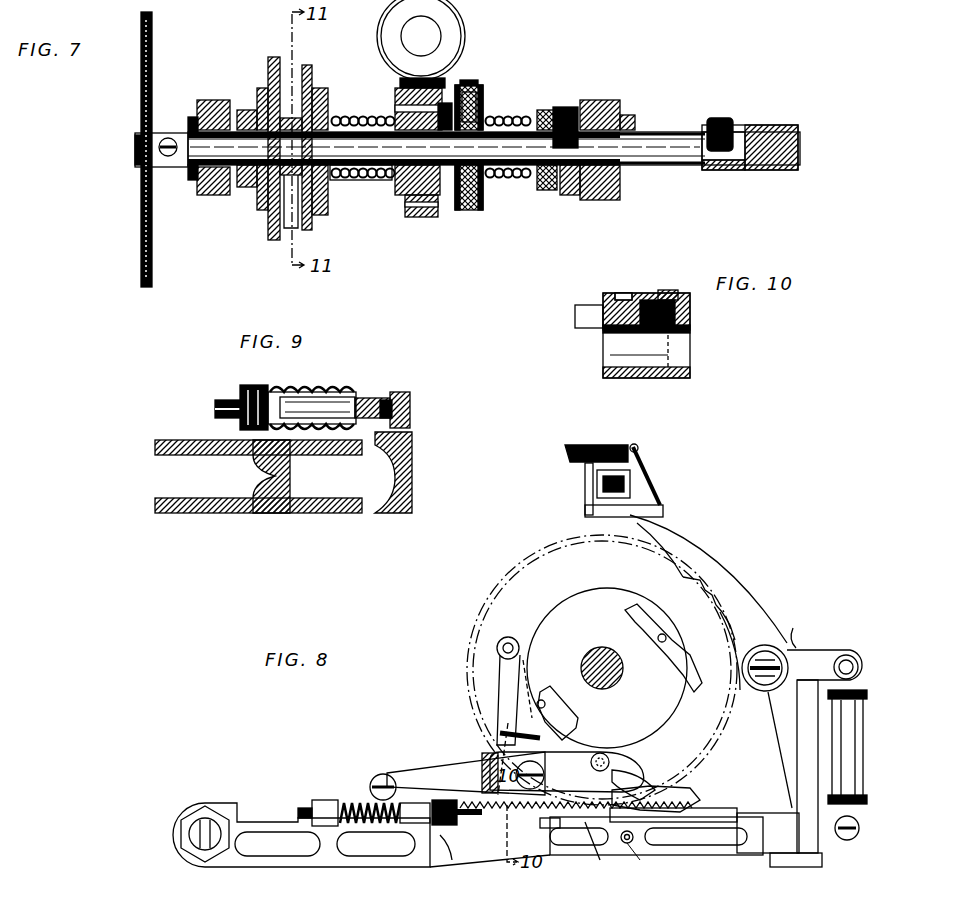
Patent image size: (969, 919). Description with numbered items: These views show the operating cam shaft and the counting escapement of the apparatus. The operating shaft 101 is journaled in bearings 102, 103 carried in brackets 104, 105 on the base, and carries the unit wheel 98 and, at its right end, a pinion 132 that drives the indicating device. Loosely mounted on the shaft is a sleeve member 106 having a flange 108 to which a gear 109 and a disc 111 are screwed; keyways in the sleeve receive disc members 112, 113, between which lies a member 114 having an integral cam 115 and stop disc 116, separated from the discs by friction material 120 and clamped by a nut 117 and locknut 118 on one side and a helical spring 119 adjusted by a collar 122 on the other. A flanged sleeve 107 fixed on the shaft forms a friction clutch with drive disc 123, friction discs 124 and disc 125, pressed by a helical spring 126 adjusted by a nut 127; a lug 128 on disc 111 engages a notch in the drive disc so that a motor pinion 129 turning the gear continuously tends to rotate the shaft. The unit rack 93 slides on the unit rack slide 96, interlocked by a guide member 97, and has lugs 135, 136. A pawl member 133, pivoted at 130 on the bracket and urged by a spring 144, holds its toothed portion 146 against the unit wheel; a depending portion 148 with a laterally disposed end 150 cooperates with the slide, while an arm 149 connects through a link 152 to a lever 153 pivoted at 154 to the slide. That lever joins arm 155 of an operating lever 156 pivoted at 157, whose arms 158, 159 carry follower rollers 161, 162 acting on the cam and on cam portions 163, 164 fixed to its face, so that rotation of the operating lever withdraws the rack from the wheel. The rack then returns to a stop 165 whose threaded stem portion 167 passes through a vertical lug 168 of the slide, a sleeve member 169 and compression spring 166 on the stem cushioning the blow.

In FIG. 10, the unit rack 93 is at (610, 300).
In FIG. 8, the unit rack 93 is at (550, 830).
In FIG. 10, the unit rack slide 96 is at (682, 350).
In FIG. 9, the unit rack slide 96 is at (272, 513).
In FIG. 8, the unit rack slide 96 is at (437, 852).
In FIG. 10, the guide member 97 is at (655, 303).
In FIG. 8, the guide member 97 is at (720, 815).
In FIG. 7, the unit wheel 98 is at (152, 257).
In FIG. 8, the unit wheel 98 is at (690, 582).
In FIG. 7, the operating shaft 101 is at (638, 146).
In FIG. 8, the operating shaft 101 is at (585, 668).
In FIG. 7, the bearing 102 is at (202, 100).
In FIG. 7, the bearing 103 is at (622, 130).
In FIG. 7, the bracket 104 is at (206, 195).
In FIG. 7, the bracket 105 is at (618, 190).
In FIG. 7, the sleeve member 106 is at (400, 116).
In FIG. 7, the flanged sleeve 107 is at (537, 180).
In FIG. 7, the flange 108 is at (396, 100).
In FIG. 7, the gear 109 is at (425, 216).
In FIG. 7, the disc 111 is at (436, 210).
In FIG. 7, the disc member 112 is at (260, 92).
In FIG. 7, the disc member 113 is at (320, 88).
In FIG. 7, the member 114 is at (296, 226).
In FIG. 7, the cam 115 is at (275, 238).
In FIG. 8, the cam 115 is at (590, 588).
In FIG. 7, the stop disc 116 is at (322, 220).
In FIG. 7, the nut 117 is at (258, 200).
In FIG. 7, the locknut 118 is at (248, 195).
In FIG. 7, the helical spring 119 is at (353, 180).
In FIG. 7, the disc of friction material 120 is at (272, 62).
In FIG. 7, the collar 122 is at (372, 185).
In FIG. 7, the drive disc 123 is at (472, 82).
In FIG. 7, the discs of friction material 124 is at (465, 210).
In FIG. 7, the disc 125 is at (483, 98).
In FIG. 7, the helical spring 126 is at (490, 182).
In FIG. 7, the nut 127 is at (556, 107).
In FIG. 7, the lug 128 is at (480, 78).
In FIG. 7, the pinion 129 is at (450, 32).
In FIG. 8, the pivot 130 is at (768, 692).
In FIG. 7, the pinion 132 is at (766, 128).
In FIG. 8, the pawl member 133 is at (808, 628).
In FIG. 8, the lug 135 is at (464, 853).
In FIG. 8, the lug 136 is at (592, 850).
In FIG. 8, the spring 144 is at (578, 468).
In FIG. 8, the toothed portion 146 is at (745, 578).
In FIG. 8, the portion 148 is at (797, 770).
In FIG. 8, the arm 149 is at (808, 658).
In FIG. 8, the laterally disposed end 150 is at (785, 867).
In FIG. 8, the link 152 is at (836, 732).
In FIG. 8, the lever 153 is at (628, 845).
In FIG. 8, the pivot 154 is at (627, 860).
In FIG. 8, the arm 155 is at (468, 754).
In FIG. 8, the operating lever 156 is at (490, 755).
In FIG. 8, the pivot 157 is at (554, 773).
In FIG. 8, the arm 158 is at (612, 782).
In FIG. 8, the arm 159 is at (503, 673).
In FIG. 8, the follower roller 161 is at (612, 765).
In FIG. 8, the follower roller 162 is at (520, 640).
In FIG. 8, the cam portion 163 is at (645, 628).
In FIG. 8, the cam portion 164 is at (570, 725).
In FIG. 9, the stop 165 is at (410, 412).
In FIG. 8, the stop 165 is at (396, 778).
In FIG. 9, the compression spring 166 is at (305, 391).
In FIG. 8, the compression spring 166 is at (345, 800).
In FIG. 9, the stem portion 167 is at (386, 395).
In FIG. 9, the vertical lug 168 is at (263, 385).
In FIG. 9, the sleeve member 169 is at (318, 455).